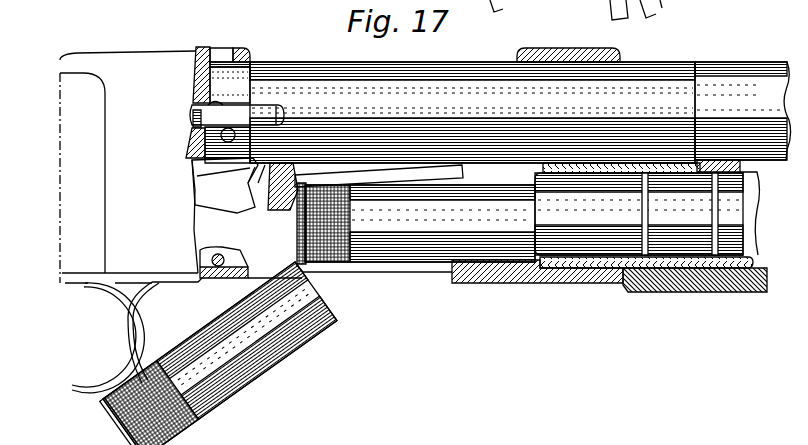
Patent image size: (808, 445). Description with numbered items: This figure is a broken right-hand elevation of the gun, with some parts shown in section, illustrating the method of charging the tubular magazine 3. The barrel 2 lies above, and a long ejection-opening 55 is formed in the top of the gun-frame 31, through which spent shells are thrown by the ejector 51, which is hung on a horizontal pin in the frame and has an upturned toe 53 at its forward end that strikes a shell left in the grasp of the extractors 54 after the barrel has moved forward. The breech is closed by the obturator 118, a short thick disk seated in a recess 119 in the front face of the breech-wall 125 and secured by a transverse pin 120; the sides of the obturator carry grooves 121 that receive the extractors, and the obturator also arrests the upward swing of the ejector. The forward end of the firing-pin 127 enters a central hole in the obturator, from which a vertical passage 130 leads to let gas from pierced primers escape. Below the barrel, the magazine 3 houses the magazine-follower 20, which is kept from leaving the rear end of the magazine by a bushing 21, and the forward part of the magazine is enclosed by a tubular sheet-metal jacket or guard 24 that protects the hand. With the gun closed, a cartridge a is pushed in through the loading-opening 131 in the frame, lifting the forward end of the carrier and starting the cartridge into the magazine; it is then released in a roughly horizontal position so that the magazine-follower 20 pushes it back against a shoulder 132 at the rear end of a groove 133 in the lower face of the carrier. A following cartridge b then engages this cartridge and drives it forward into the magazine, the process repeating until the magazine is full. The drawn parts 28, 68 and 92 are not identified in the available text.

The barrel 2 is at (743, 111).
The magazine 3 is at (760, 176).
The magazine-follower 20 is at (639, 214).
The bushing 21 is at (577, 270).
The tubular sheet-metal jacket or guard 24 is at (755, 260).
The frame block 28 is at (678, 287).
The gun-frame 31 is at (568, 44).
The ejector 51 is at (225, 185).
The upturned toe 53 is at (268, 186).
The extractors 54 is at (237, 114).
The ejection-opening 55 is at (472, 102).
The trigger guard 68 is at (127, 333).
The lever 92 is at (604, 10).
The obturator 118 is at (231, 78).
The recess 119 is at (208, 62).
The transverse pin 120 is at (229, 142).
The grooves 121 is at (232, 104).
The breech-wall 125 is at (192, 82).
The firing-pin 127 is at (200, 118).
The vertical passage 130 is at (226, 58).
The loading-opening 131 is at (374, 278).
The shoulder 132 is at (291, 173).
The groove 133 is at (289, 208).
The cartridge a is at (420, 223).
The following cartridge b is at (218, 353).